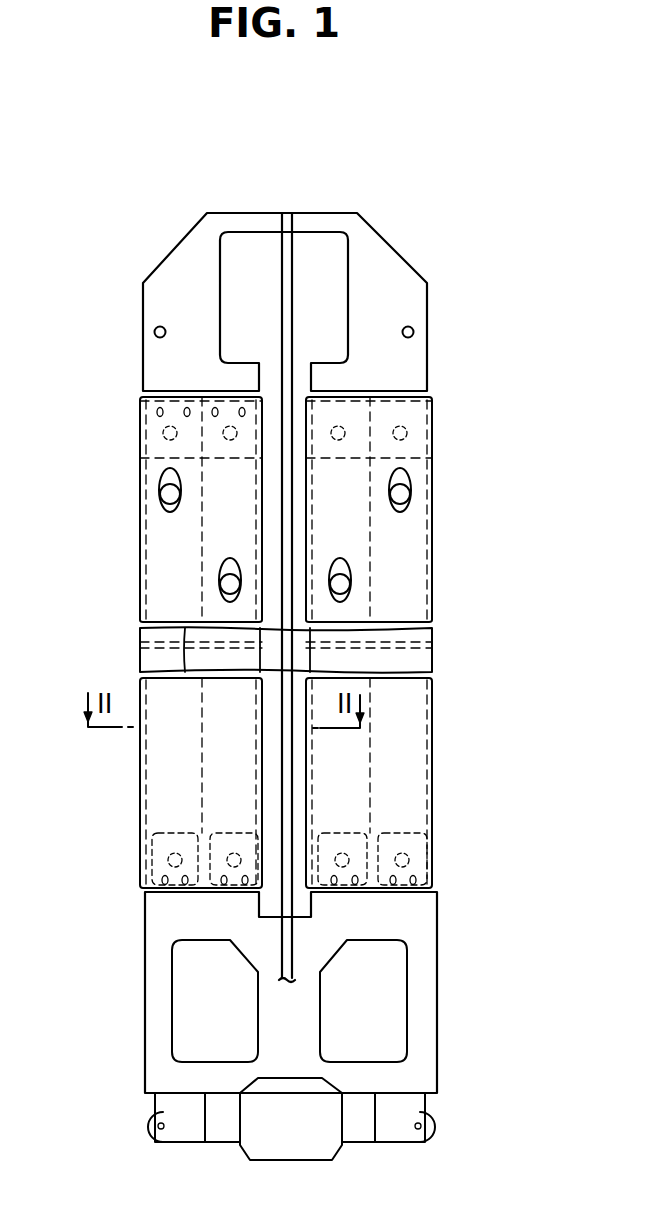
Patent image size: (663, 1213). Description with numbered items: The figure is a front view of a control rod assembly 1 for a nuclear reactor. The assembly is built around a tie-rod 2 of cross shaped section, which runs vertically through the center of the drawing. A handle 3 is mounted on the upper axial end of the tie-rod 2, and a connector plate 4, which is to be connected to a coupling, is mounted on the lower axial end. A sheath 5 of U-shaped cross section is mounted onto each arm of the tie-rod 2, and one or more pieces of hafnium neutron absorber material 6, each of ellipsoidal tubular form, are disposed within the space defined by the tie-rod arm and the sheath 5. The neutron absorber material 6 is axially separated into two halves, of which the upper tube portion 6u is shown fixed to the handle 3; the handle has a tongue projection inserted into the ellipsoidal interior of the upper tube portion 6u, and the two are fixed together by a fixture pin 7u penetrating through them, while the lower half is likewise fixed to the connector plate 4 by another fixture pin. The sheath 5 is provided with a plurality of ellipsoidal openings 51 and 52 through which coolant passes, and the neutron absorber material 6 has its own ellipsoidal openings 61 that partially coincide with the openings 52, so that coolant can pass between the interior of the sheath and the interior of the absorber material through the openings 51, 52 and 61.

The control rod assembly 1 is at (438, 560).
The tie-rod 2 is at (290, 363).
The handle 3 is at (357, 213).
The connector plate 4 is at (436, 1035).
The sheath 5 is at (433, 476).
The ellipsoidal openings 51 is at (158, 412).
The ellipsoidal openings 52 is at (163, 482).
The ellipsoidal openings 61 is at (163, 496).
The hafnium neutron absorber material 6 is at (140, 636).
The upper tube portion 6u is at (160, 545).
The fixture pin 7u is at (406, 430).